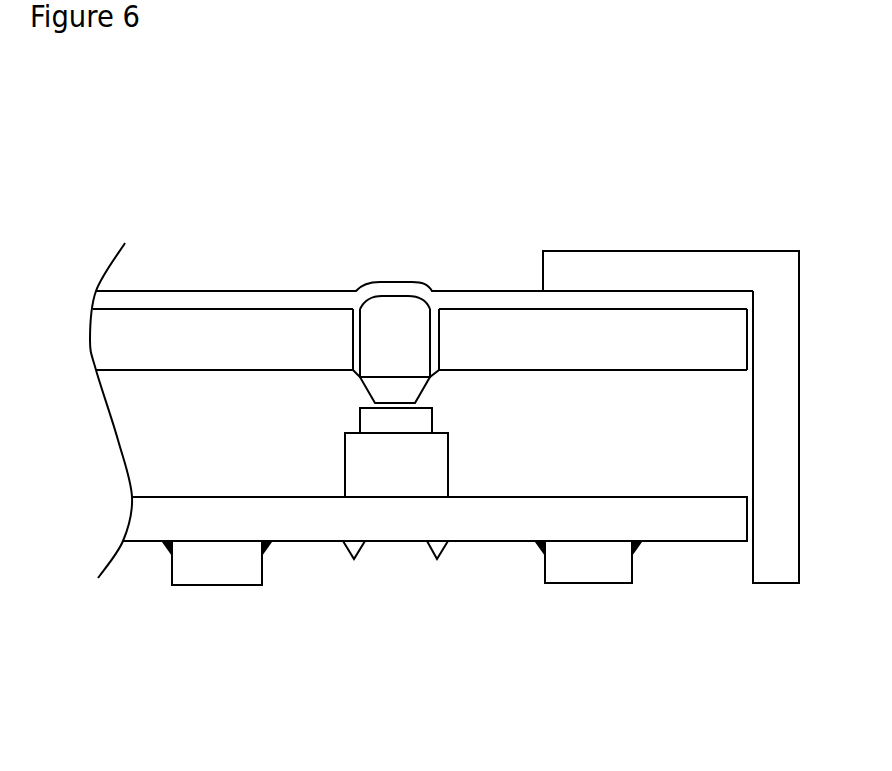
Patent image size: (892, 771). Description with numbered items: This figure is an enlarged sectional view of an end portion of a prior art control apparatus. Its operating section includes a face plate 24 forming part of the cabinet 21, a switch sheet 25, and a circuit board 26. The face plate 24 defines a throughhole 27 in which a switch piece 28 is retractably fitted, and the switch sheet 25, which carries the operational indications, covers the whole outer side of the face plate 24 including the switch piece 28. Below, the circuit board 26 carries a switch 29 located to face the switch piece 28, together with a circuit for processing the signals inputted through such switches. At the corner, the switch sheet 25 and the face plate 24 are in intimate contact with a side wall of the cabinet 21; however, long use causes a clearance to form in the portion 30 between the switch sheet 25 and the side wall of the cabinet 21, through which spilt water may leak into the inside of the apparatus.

The cabinet 21 is at (785, 542).
The face plate 24 is at (115, 337).
The switch sheet 25 is at (210, 292).
The circuit board 26 is at (153, 525).
The throughhole 27 is at (350, 373).
The switch piece 28 is at (398, 333).
The switch 29 is at (435, 465).
The portion 30 is at (655, 290).